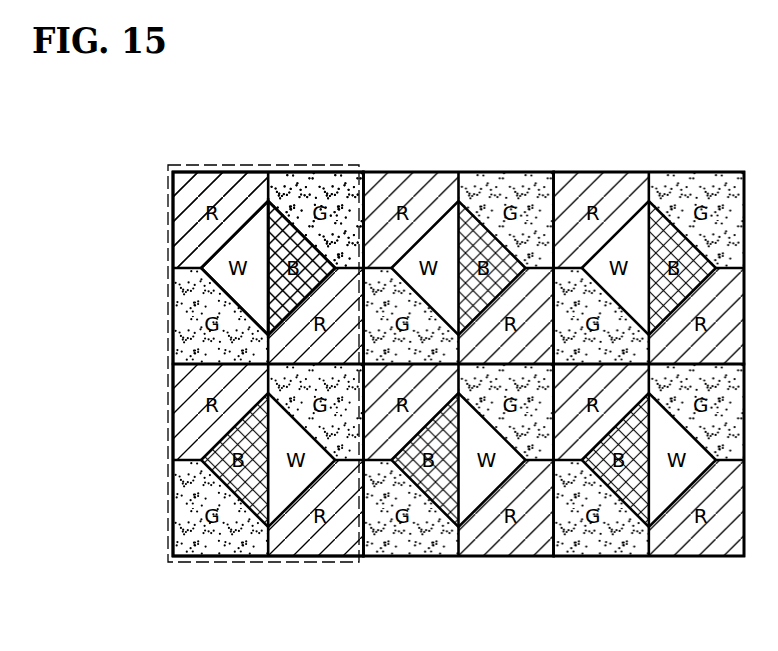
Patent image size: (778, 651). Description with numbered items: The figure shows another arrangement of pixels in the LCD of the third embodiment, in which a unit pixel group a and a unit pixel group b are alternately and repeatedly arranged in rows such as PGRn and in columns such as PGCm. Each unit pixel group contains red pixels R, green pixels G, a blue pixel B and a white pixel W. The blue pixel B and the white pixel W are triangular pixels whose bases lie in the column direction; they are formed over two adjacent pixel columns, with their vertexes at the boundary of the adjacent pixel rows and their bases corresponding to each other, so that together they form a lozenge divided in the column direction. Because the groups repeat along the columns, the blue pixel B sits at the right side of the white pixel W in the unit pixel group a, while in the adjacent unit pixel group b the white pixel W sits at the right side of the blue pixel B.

The unit pixel group a is at (295, 165).
The unit pixel group b is at (168, 550).
The pixel group row PGRn is at (145, 172).
The pixel group column PGCm is at (362, 570).
The red pixel R is at (220, 220).
The green pixel G is at (315, 220).
The blue pixel B is at (301, 268).
The white pixel W is at (234, 268).